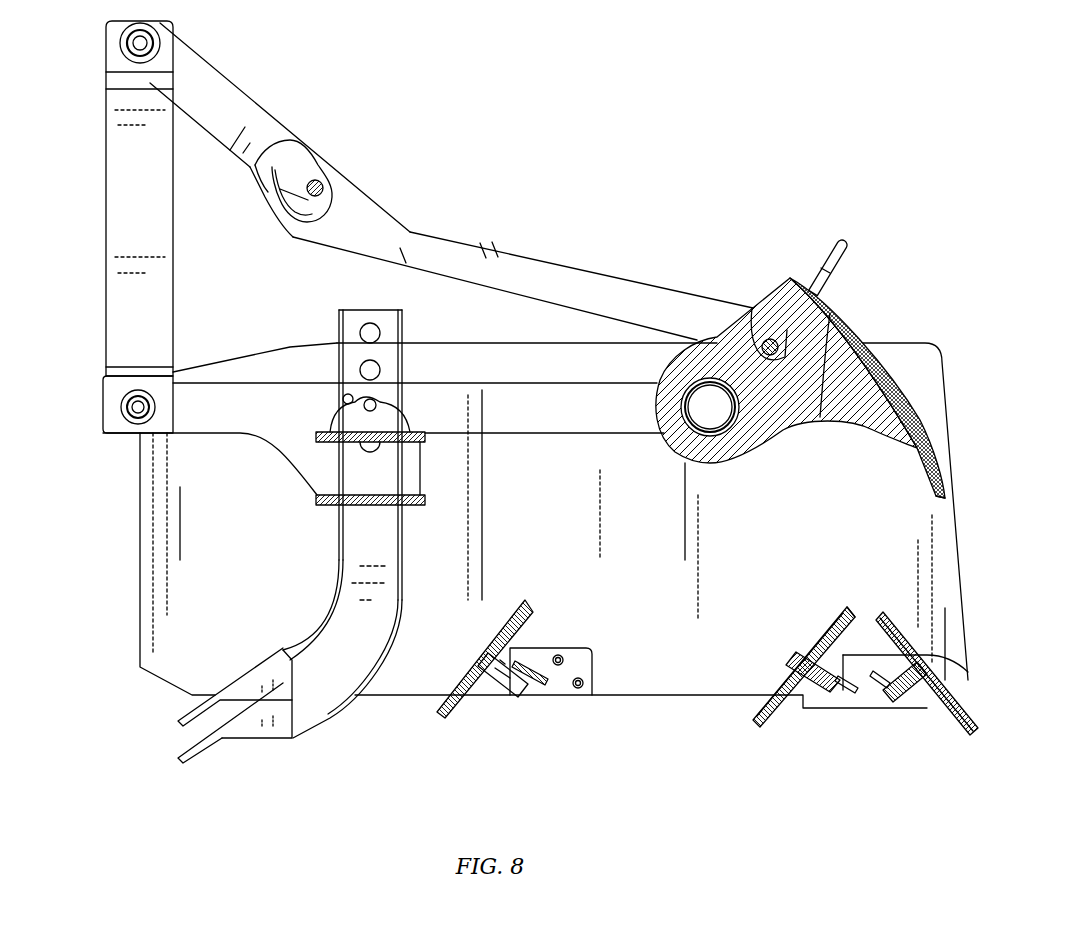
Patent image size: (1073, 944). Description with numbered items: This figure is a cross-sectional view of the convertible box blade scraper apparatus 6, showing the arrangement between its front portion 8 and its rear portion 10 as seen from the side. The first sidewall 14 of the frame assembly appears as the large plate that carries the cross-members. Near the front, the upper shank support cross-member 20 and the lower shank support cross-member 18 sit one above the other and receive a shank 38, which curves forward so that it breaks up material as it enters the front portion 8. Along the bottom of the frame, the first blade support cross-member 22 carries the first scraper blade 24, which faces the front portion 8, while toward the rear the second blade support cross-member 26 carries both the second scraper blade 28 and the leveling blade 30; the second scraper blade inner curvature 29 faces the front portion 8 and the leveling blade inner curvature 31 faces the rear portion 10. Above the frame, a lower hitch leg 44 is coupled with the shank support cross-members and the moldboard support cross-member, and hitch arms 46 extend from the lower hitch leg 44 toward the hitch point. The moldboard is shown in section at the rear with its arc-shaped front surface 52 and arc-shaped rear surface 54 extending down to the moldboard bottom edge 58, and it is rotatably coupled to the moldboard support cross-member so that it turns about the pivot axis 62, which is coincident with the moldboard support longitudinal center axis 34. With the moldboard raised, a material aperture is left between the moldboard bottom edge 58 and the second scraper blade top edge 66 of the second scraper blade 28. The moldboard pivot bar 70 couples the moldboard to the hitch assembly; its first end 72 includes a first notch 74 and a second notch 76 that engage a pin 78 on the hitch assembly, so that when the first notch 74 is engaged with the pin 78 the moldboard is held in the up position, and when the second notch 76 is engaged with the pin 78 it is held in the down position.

The convertible box blade scraper apparatus 6 is at (920, 91).
The front portion 8 is at (116, 460).
The rear portion 10 is at (990, 632).
The first sidewall 14 is at (158, 530).
The lower shank support cross-member 18 is at (410, 505).
The upper shank support cross-member 20 is at (425, 442).
The first blade support cross-member 22 is at (538, 682).
The first scraper blade 24 is at (460, 686).
The second blade support cross-member 26 is at (857, 685).
The second scraper blade 28 is at (790, 708).
The second scraper blade inner curvature 29 is at (820, 648).
The leveling blade 30 is at (940, 722).
The leveling blade inner curvature 31 is at (968, 668).
The moldboard support longitudinal center axis 34 is at (710, 400).
The shank 38 is at (320, 707).
The lower hitch leg 44 is at (245, 407).
The hitch arm 46 is at (122, 150).
The front surface 52 is at (820, 423).
The rear surface 54 is at (860, 343).
The moldboard bottom edge 58 is at (955, 500).
The pivot axis 62 is at (710, 407).
The second scraper blade top edge 66 is at (847, 605).
The moldboard pivot bar 70 is at (470, 253).
The first end 72 is at (280, 150).
The first notch 74 is at (297, 202).
The second notch 76 is at (255, 183).
The pin 78 is at (320, 177).